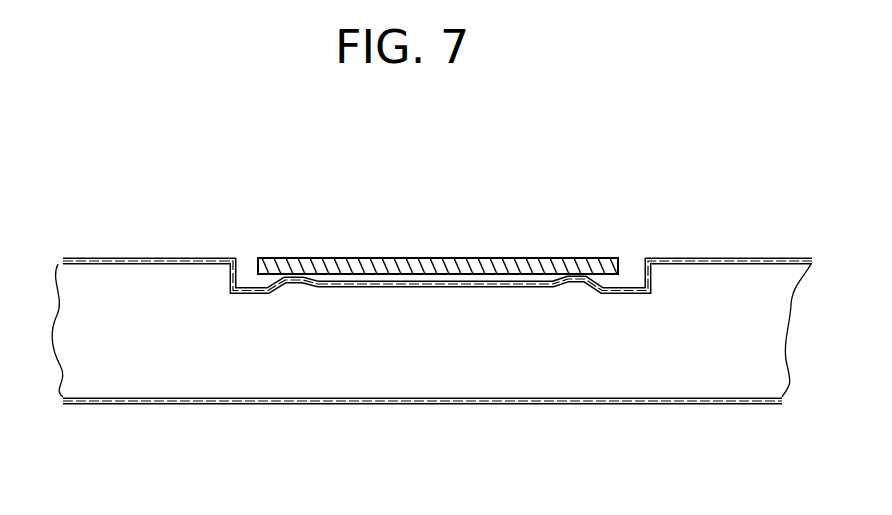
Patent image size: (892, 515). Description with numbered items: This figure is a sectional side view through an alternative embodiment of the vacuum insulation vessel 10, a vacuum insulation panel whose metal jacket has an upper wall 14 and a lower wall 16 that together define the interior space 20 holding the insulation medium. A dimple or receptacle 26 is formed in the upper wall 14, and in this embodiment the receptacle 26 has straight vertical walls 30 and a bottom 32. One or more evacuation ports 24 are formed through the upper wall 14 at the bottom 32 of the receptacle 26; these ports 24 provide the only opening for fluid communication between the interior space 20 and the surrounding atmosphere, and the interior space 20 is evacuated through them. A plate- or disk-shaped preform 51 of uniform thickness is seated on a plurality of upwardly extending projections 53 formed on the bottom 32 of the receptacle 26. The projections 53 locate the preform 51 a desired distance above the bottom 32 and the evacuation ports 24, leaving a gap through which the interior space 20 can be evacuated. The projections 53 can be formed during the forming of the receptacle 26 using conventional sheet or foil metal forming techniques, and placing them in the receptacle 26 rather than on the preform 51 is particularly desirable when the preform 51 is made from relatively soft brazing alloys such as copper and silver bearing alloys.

The vacuum insulation vessel 10 is at (174, 219).
The upper wall 14 is at (718, 256).
The lower wall 16 is at (657, 409).
The interior space 20 is at (703, 375).
The evacuation ports 24 is at (500, 295).
The receptacle 26 is at (656, 273).
The straight vertical walls 30 is at (226, 274).
The bottom of the receptacle 32 is at (340, 296).
The plate-shaped preform 51 is at (494, 257).
The projections 53 is at (306, 284).